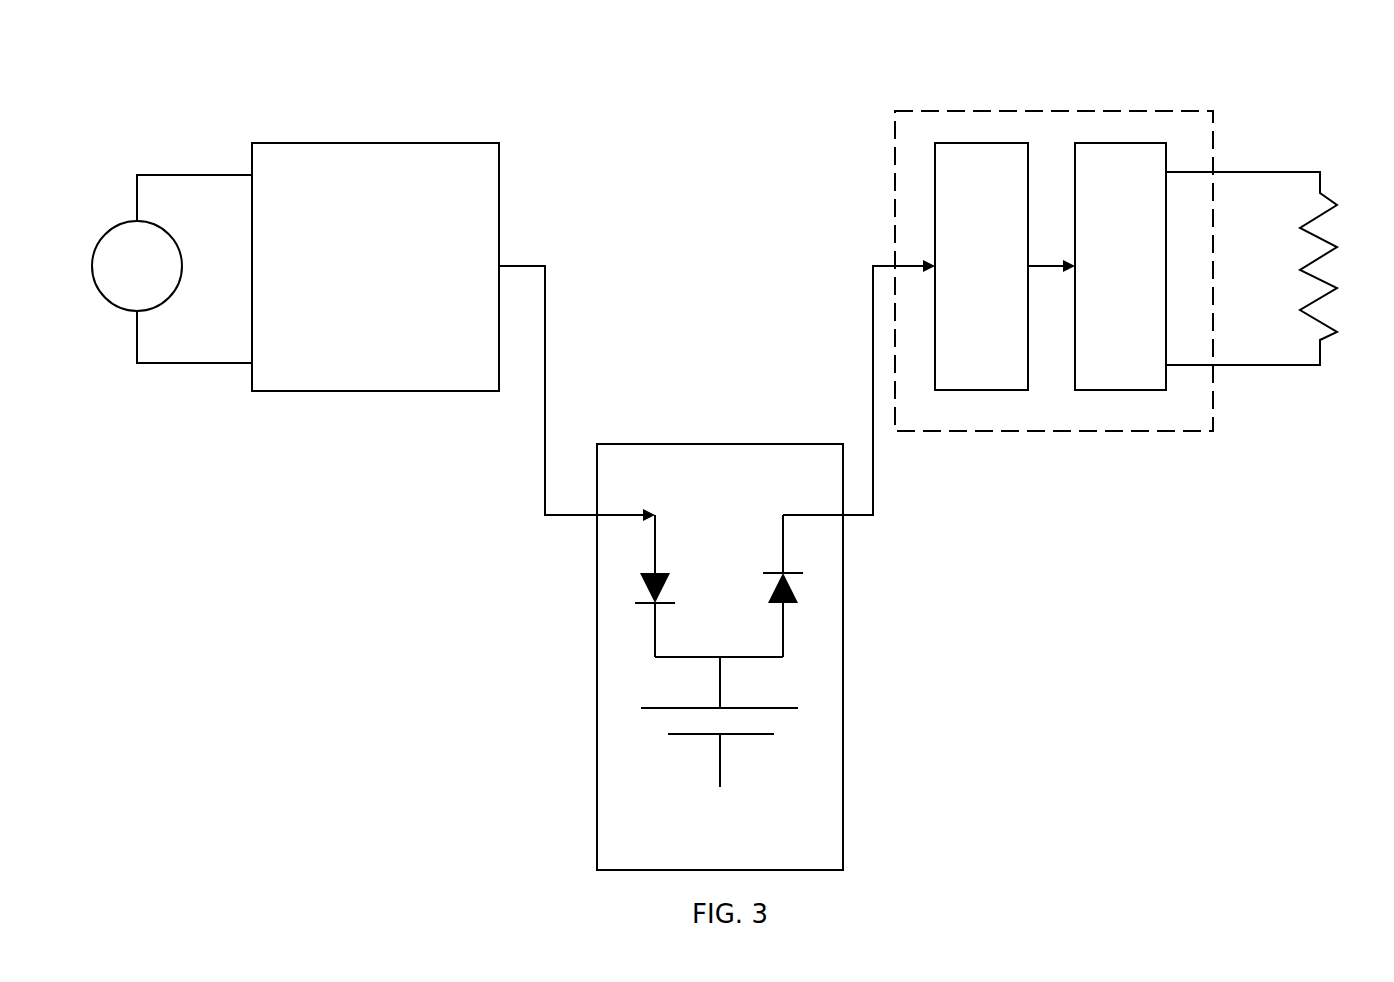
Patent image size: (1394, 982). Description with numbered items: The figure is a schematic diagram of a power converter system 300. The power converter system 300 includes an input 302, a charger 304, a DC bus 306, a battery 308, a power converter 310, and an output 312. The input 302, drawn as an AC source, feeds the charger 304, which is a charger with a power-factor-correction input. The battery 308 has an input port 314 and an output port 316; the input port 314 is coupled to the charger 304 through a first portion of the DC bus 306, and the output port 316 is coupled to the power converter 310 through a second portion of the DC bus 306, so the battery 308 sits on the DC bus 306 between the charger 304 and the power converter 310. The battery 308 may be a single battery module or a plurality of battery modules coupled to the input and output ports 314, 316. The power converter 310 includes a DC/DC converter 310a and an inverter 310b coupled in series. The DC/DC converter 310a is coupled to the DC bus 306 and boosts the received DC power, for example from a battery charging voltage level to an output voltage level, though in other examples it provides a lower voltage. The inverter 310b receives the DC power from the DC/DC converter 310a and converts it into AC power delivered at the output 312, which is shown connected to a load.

The power converter system 300 is at (1188, 57).
The input 302 is at (187, 172).
The charger 304 is at (371, 140).
The DC bus 306 is at (545, 377).
The battery 308 is at (843, 693).
The power converter 310 is at (1050, 111).
The DC/DC converter 310a is at (975, 392).
The inverter 310b is at (1117, 392).
The output 312 is at (1255, 170).
The input port 314 is at (597, 517).
The output port 316 is at (843, 517).